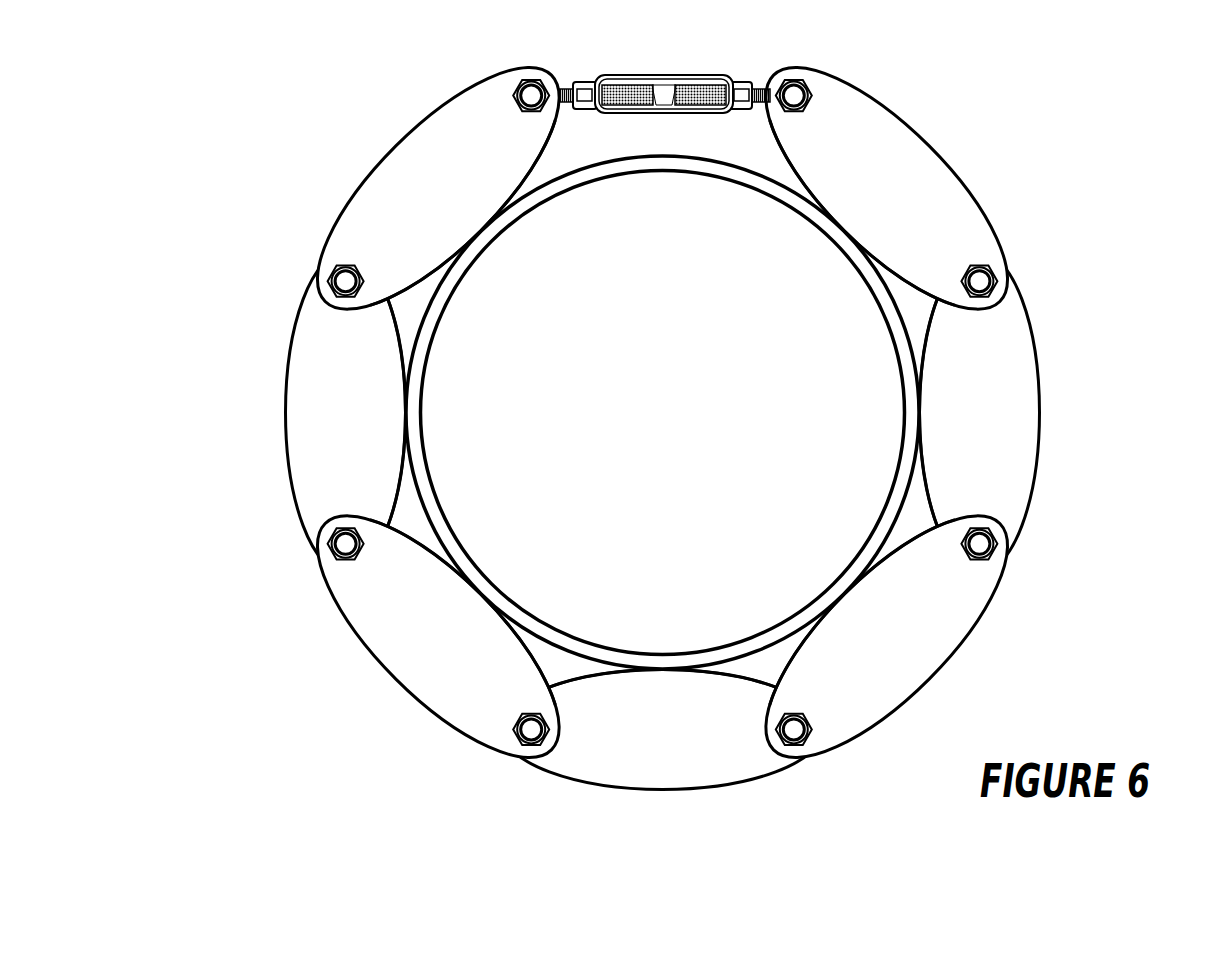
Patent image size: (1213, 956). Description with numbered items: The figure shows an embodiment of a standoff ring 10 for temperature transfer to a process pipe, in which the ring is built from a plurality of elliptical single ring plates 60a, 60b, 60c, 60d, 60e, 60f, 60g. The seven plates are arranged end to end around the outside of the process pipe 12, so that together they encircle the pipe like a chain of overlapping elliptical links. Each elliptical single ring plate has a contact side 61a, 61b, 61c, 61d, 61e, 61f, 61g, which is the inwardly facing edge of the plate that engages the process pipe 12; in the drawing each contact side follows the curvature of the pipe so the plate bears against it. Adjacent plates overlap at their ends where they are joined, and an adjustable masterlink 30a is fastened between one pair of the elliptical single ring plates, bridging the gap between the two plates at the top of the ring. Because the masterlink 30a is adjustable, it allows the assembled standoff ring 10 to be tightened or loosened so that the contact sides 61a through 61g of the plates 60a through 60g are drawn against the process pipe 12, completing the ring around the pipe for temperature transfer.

The standoff ring 10 is at (255, 54).
The process pipe 12 is at (440, 510).
The adjustable masterlink 30a is at (667, 75).
The elliptical single ring plate 60a is at (910, 162).
The elliptical single ring plate 60b is at (1012, 398).
The elliptical single ring plate 60c is at (910, 667).
The elliptical single ring plate 60d is at (650, 762).
The elliptical single ring plate 60e is at (415, 667).
The elliptical single ring plate 60f is at (313, 398).
The elliptical single ring plate 60g is at (415, 162).
The contact side 61a is at (847, 230).
The contact side 61b is at (923, 412).
The contact side 61c is at (850, 595).
The contact side 61d is at (665, 675).
The contact side 61e is at (475, 595).
The contact side 61f is at (402, 412).
The contact side 61g is at (478, 230).